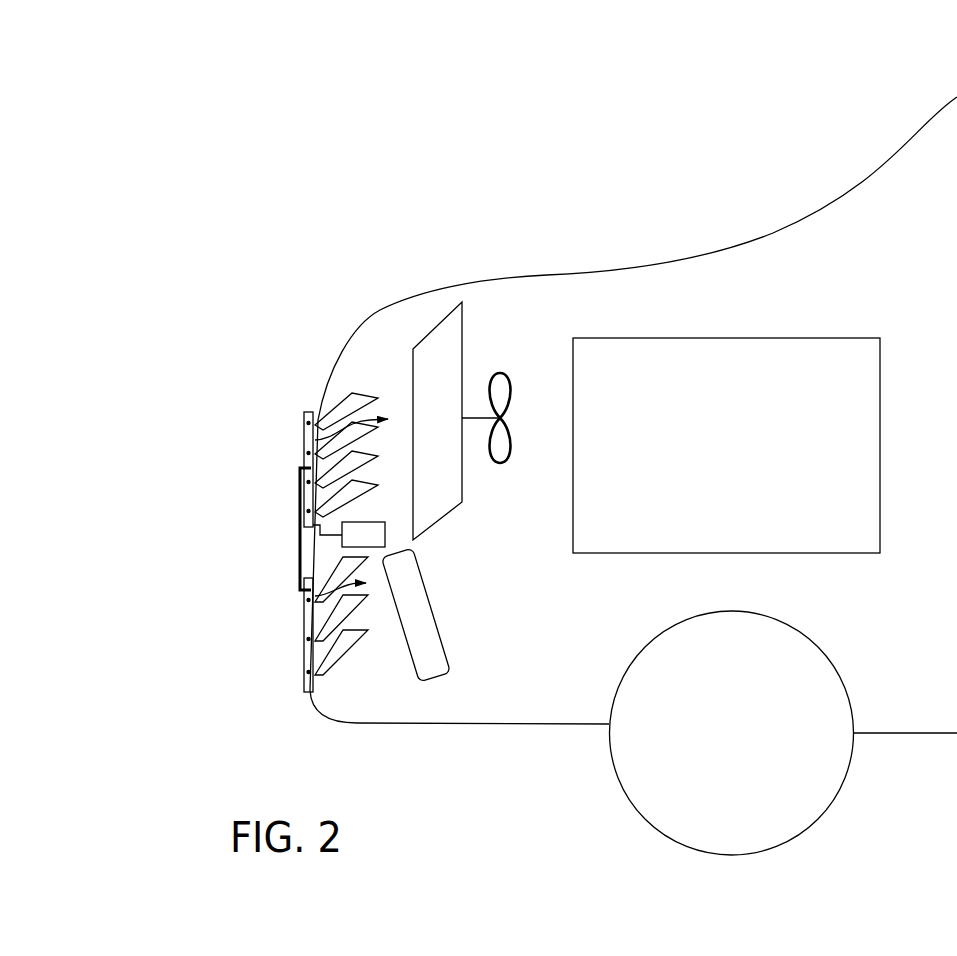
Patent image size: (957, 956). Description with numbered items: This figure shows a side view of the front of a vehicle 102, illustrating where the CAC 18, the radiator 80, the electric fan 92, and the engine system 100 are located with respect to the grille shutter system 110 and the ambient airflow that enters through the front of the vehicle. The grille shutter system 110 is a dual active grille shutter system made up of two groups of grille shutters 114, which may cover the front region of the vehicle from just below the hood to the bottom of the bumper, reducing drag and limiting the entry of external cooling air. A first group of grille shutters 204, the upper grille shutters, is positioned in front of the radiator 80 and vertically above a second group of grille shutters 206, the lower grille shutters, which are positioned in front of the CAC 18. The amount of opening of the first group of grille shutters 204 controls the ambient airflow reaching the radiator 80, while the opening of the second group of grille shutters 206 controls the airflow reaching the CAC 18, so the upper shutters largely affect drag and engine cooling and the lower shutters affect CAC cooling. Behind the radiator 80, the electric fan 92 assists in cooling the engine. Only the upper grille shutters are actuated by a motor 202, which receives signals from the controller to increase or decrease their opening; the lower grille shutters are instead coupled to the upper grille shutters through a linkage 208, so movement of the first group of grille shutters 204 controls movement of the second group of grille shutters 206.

The CAC 18 is at (408, 648).
The radiator 80 is at (437, 520).
The electric fan 92 is at (500, 463).
The engine system 100 is at (573, 338).
The vehicle 102 is at (882, 162).
The grille shutter system 110 is at (196, 537).
The grille shutters 114 is at (353, 392).
The motor 202 is at (377, 545).
The first group of grille shutters 204 is at (306, 441).
The second group of grille shutters 206 is at (286, 624).
The linkage 208 is at (299, 537).